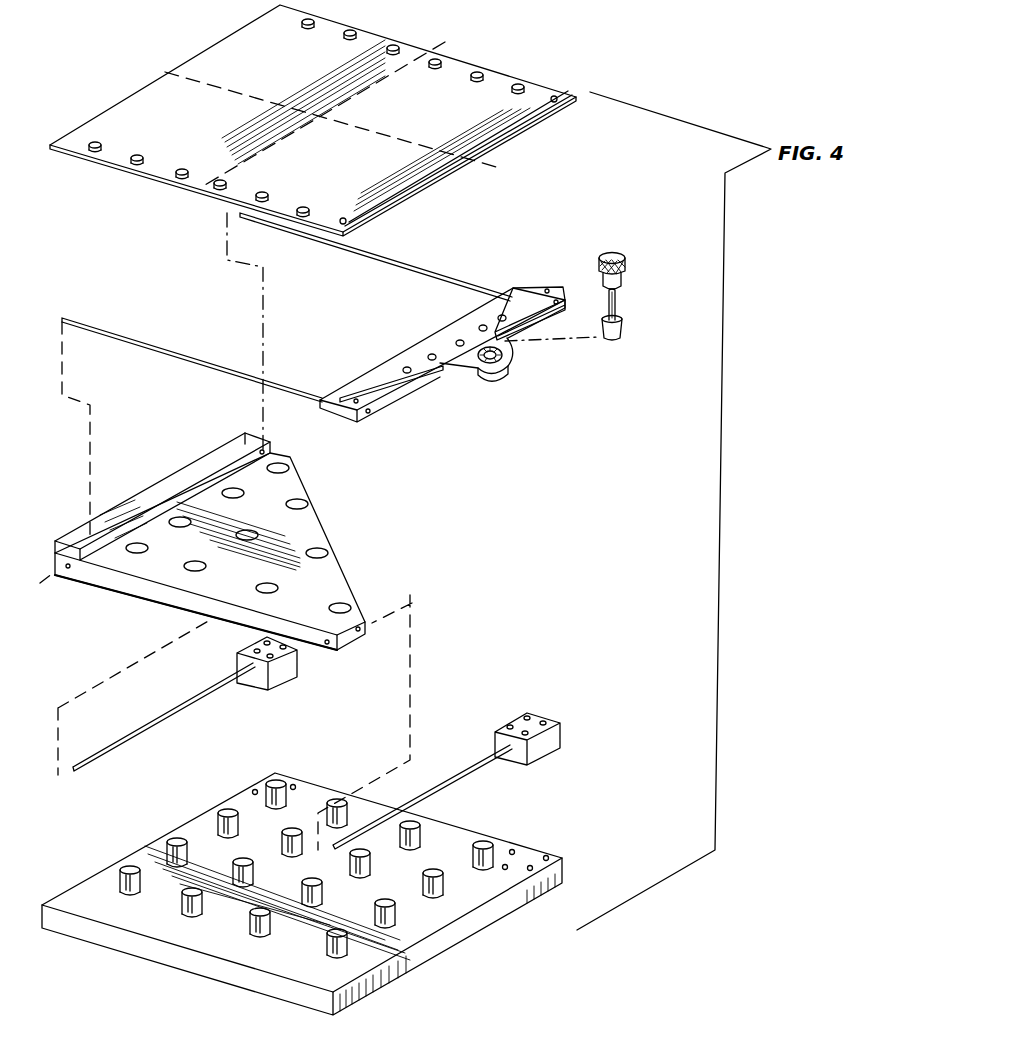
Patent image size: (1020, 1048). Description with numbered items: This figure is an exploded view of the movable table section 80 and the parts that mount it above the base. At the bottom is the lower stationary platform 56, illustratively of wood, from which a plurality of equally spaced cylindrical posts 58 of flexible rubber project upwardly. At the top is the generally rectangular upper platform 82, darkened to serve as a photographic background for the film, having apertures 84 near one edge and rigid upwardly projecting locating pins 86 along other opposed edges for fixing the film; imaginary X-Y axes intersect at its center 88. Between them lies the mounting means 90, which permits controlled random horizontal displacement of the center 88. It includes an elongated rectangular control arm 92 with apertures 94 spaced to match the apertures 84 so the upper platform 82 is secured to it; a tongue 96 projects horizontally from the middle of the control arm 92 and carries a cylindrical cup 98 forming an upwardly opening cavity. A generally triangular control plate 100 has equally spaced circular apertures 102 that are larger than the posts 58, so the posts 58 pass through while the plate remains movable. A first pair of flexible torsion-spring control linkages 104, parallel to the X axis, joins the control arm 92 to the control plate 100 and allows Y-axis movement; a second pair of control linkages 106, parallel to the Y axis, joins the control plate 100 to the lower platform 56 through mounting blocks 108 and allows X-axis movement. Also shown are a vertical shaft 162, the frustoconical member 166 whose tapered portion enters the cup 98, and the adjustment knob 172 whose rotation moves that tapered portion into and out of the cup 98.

The lower stationary platform 56 is at (450, 937).
The posts 58 is at (250, 925).
The movable table section 80 is at (490, 40).
The upper platform 82 is at (503, 135).
The apertures 84 is at (556, 96).
The locating pins 86 is at (332, 42).
The center 88 is at (315, 113).
The mounting means 90 is at (410, 490).
The control arm 92 is at (523, 303).
The apertures 94 is at (548, 288).
The tongue 96 is at (510, 360).
The cup 98 is at (482, 360).
The control plate 100 is at (320, 530).
The apertures 102 is at (248, 530).
The control linkages 104 is at (438, 271).
The control linkages 106 is at (165, 712).
The mounting blocks 108 is at (285, 680).
The shaft 162 is at (616, 308).
The frustoconical-shaped member 166 is at (620, 335).
The adjustment knob 172 is at (613, 258).